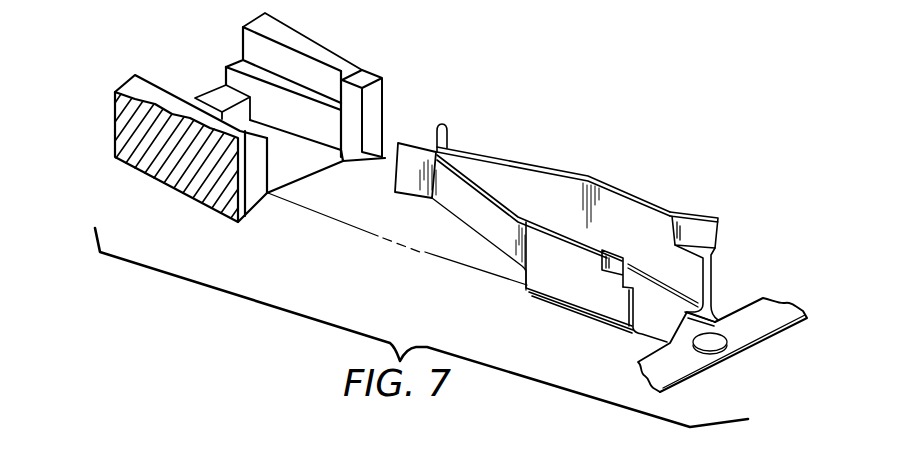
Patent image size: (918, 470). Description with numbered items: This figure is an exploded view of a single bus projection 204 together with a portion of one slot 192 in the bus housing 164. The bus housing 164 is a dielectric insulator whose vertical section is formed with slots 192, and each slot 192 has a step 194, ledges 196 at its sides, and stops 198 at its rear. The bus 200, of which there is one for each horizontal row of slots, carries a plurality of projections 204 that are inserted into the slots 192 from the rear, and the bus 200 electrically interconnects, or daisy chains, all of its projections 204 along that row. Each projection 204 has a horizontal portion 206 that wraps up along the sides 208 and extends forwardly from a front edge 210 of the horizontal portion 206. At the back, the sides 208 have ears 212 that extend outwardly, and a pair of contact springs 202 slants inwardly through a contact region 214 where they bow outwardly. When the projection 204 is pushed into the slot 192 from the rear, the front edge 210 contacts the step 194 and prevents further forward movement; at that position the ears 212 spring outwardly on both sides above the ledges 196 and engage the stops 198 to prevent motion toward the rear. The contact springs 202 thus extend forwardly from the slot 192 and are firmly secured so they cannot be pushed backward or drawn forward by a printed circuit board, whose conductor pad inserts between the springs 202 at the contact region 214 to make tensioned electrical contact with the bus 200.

The bus housing 164 is at (165, 192).
The slot 192 is at (238, 127).
The step 194 is at (237, 110).
The ledges 196 is at (282, 85).
The stops 198 is at (354, 79).
The bus 200 is at (720, 364).
The contact springs 202 is at (550, 166).
The projection 204 is at (590, 167).
The horizontal portion 206 is at (668, 305).
The sides 208 is at (582, 282).
The front edge 210 is at (525, 278).
The ears 212 is at (697, 214).
The contact region 214 is at (448, 142).